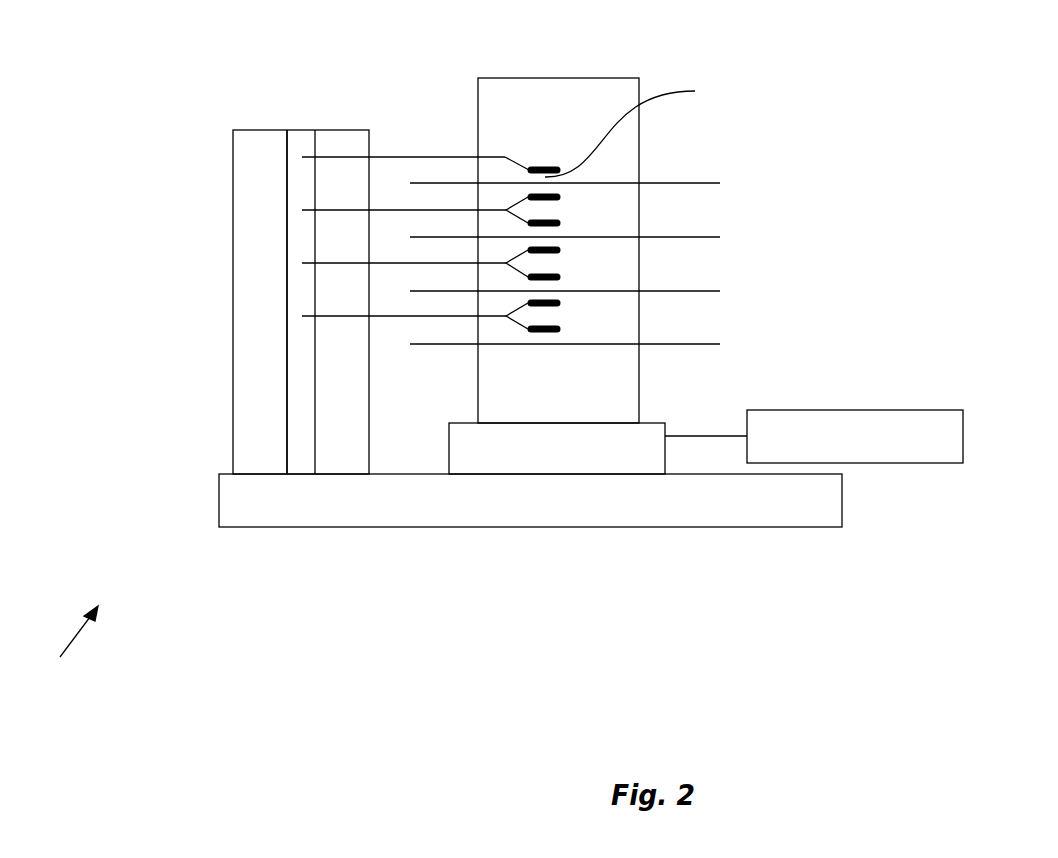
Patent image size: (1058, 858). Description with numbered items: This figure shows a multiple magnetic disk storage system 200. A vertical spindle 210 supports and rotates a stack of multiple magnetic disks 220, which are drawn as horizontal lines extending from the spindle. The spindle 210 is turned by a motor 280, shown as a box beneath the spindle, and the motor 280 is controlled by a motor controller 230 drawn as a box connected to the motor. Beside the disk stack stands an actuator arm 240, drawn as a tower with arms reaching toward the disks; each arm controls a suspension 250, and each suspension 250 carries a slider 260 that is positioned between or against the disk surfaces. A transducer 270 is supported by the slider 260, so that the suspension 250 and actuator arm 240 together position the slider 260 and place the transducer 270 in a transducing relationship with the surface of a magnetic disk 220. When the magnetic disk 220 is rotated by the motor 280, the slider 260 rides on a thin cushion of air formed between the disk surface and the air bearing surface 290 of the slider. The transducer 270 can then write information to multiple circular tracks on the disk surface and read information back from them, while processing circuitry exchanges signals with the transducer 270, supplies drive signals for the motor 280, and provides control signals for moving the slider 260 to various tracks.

The multiple magnetic disk storage system 200 is at (69, 644).
The spindle 210 is at (628, 78).
The magnetic disks 220 is at (680, 183).
The motor controller 230 is at (880, 410).
The actuator arm 240 is at (424, 155).
The suspension 250 is at (518, 157).
The slider 260 is at (548, 165).
The transducer 270 is at (557, 333).
The motor 280 is at (655, 423).
The air bearing surface (ABS) 290 is at (642, 128).